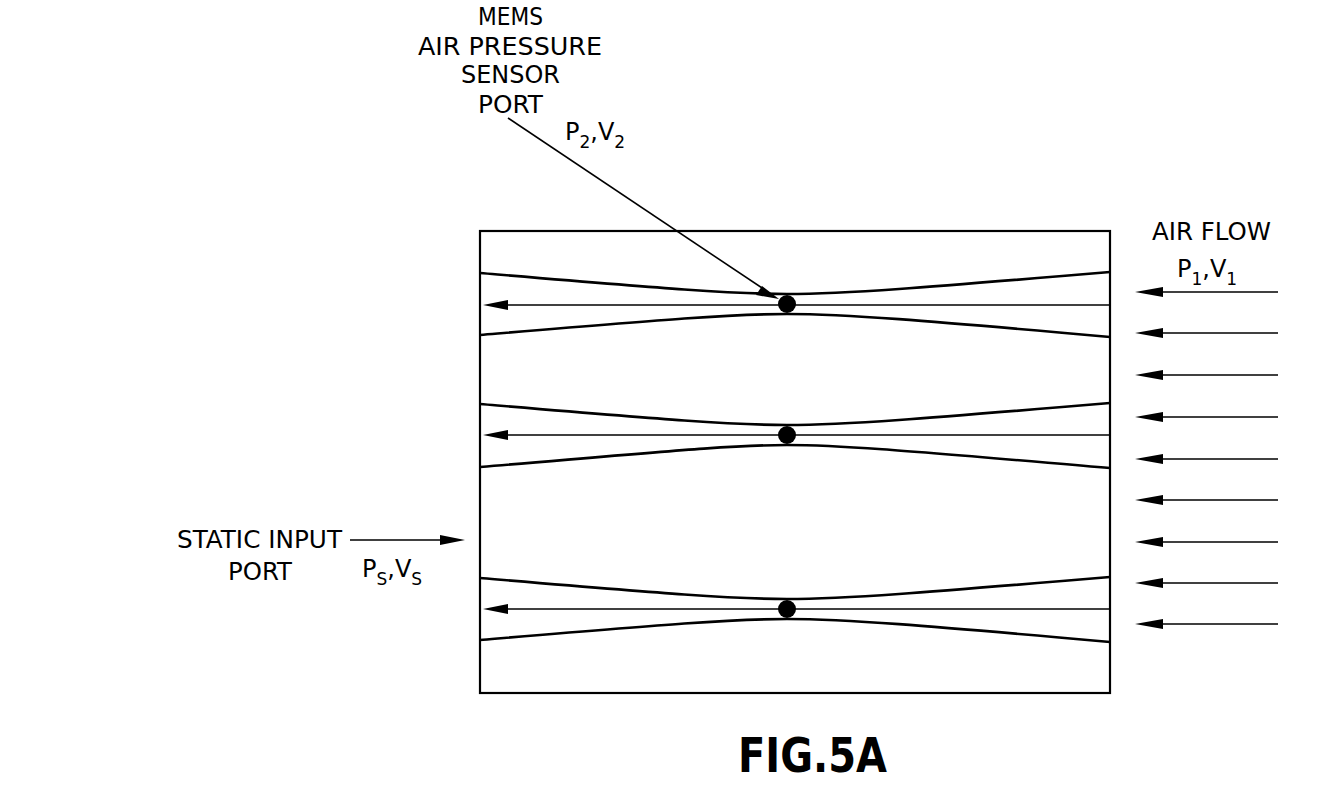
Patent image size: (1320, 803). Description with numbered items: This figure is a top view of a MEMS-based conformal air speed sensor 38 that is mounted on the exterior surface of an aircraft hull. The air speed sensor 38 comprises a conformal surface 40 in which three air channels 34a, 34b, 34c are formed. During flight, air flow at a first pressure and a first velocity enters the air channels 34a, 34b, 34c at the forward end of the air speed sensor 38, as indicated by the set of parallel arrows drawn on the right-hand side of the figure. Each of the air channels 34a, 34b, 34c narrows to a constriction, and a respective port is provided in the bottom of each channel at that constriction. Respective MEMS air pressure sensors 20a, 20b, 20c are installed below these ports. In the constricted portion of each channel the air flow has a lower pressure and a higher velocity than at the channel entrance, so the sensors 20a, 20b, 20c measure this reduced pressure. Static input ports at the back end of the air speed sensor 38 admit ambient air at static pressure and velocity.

The MEMS-based conformal air speed sensor 38 is at (512, 216).
The conformal surface 40 is at (507, 390).
The air channel 34a is at (940, 284).
The air channel 34b is at (938, 414).
The air channel 34c is at (960, 591).
The MEMS air pressure sensor 20a is at (790, 312).
The MEMS air pressure sensor 20b is at (787, 444).
The MEMS air pressure sensor 20c is at (788, 600).